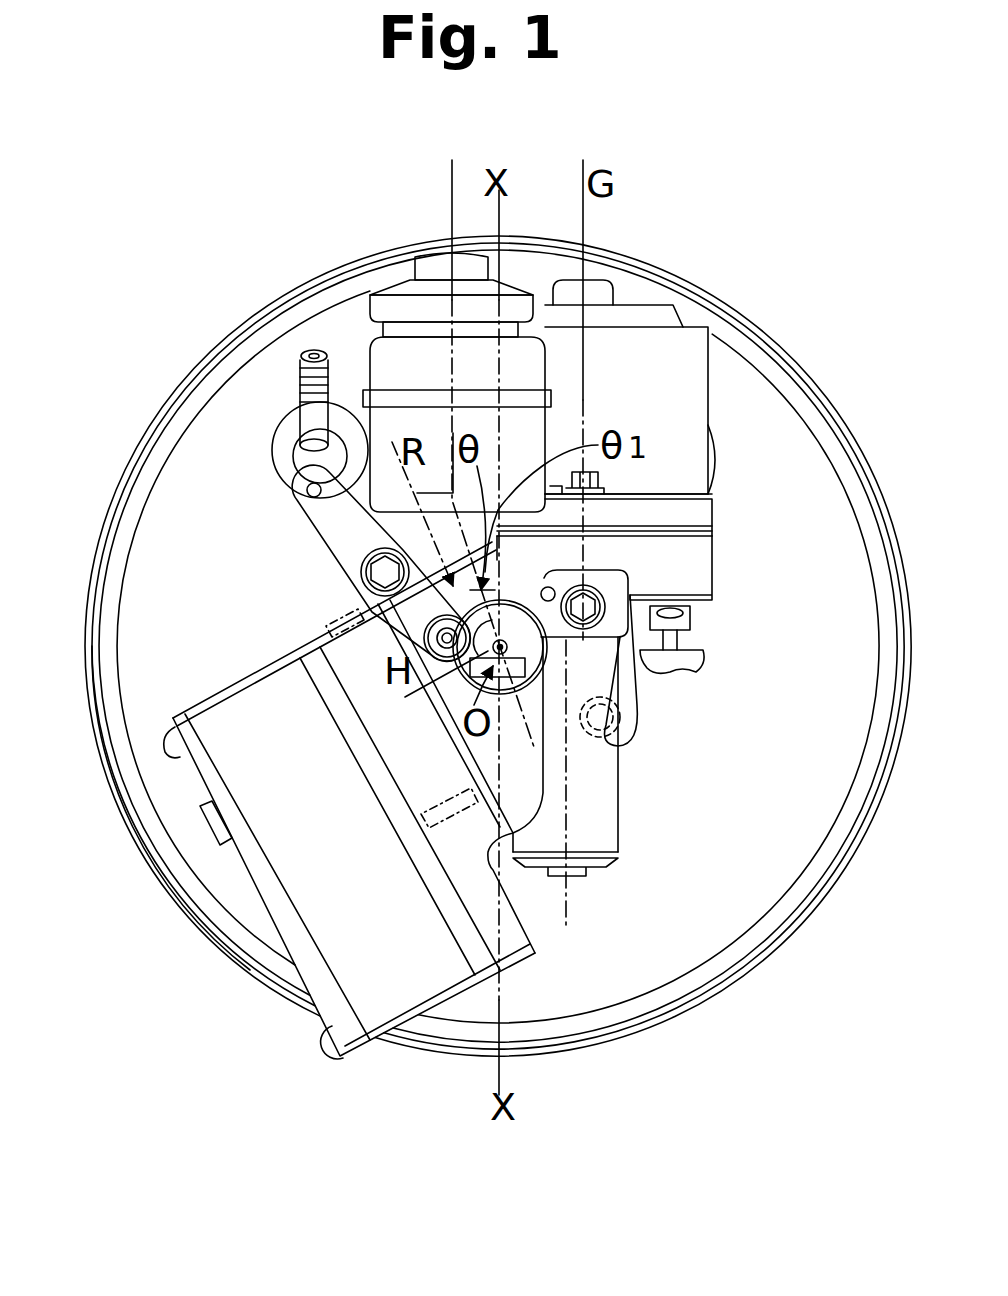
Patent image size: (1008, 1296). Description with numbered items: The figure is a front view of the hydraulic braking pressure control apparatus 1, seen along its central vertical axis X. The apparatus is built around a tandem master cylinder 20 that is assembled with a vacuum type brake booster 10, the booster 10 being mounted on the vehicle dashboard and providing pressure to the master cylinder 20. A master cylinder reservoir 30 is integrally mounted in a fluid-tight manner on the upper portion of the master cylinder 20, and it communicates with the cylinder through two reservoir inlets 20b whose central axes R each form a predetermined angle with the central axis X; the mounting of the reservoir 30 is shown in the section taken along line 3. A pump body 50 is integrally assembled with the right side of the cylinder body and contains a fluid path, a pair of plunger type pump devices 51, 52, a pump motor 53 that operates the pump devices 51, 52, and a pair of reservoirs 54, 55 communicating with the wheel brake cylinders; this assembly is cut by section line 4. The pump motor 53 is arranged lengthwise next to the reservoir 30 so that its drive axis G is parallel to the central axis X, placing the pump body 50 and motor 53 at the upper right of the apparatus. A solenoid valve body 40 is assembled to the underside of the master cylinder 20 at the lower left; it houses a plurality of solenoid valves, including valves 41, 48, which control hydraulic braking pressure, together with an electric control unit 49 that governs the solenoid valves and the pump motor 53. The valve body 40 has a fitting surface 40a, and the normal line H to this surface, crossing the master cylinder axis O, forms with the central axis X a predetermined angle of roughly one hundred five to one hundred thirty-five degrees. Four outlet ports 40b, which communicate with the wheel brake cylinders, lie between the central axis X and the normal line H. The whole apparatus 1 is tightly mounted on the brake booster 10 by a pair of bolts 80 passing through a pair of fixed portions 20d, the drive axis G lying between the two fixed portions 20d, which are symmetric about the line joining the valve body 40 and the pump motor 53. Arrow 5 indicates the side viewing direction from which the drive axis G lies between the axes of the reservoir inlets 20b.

The hydraulic braking pressure control apparatus 1 is at (220, 345).
The section line 3- 3 is at (487, 170).
The section line 4- 4 is at (580, 170).
The viewing arrow 5 is at (168, 898).
The brake booster 10 is at (810, 373).
The master cylinder 20 is at (510, 676).
The reservoir inlets 20b is at (318, 500).
The fixed portions 20d is at (370, 548).
The master cylinder reservoir 30 is at (530, 363).
The solenoid valve body 40 is at (290, 638).
The fitting surface 40a is at (433, 717).
The outlet ports 40b is at (327, 617).
The solenoid valve 41 is at (312, 840).
The solenoid valve 48 is at (420, 772).
The electric control unit (ECU) 49 is at (265, 755).
The pump body 50 is at (717, 550).
The plunger type pump device 51 is at (683, 582).
The plunger type pump device 52 is at (645, 558).
The pump motor 53 is at (682, 358).
The reservoir 54 is at (643, 732).
The reservoir 55 is at (597, 792).
The bolts 80 is at (372, 572).